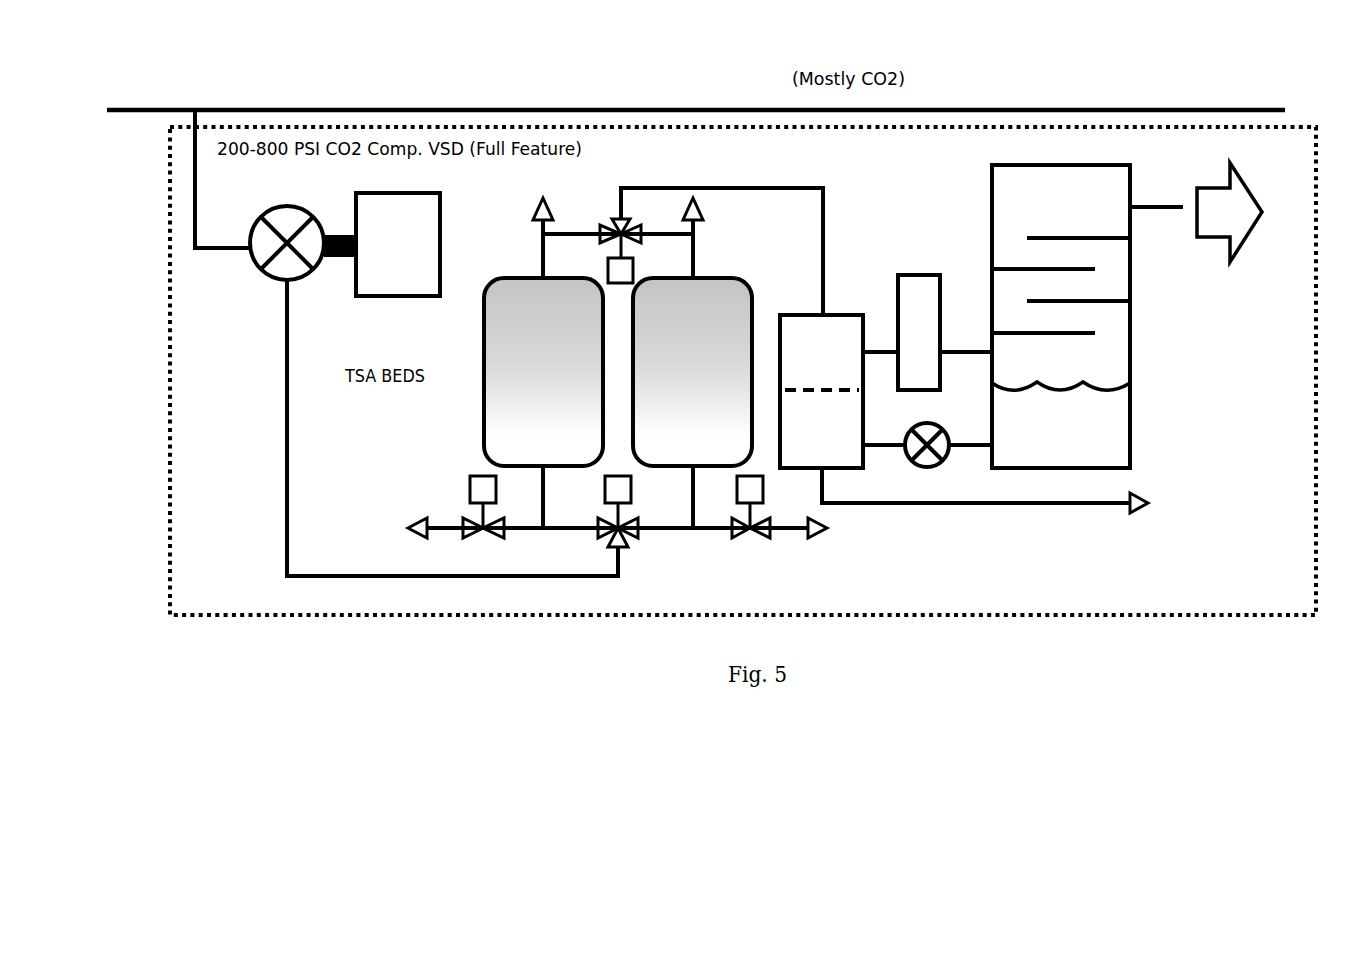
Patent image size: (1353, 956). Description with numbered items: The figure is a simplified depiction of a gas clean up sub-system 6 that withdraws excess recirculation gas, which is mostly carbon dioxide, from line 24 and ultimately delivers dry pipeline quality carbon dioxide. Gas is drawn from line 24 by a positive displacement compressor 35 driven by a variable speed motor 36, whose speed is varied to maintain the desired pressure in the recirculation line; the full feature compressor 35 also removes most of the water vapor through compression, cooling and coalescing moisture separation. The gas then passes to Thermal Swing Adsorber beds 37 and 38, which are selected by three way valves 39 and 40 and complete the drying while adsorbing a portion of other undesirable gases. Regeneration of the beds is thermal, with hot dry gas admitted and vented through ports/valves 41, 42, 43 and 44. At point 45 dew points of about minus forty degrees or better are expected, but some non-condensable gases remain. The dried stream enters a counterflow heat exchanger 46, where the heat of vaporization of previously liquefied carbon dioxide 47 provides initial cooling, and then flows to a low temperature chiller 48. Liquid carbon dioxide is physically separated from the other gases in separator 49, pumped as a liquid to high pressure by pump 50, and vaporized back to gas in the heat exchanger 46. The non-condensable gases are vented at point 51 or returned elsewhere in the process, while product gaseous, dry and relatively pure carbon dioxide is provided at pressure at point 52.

The sub-system 6 is at (718, 371).
The line 24 is at (696, 162).
The positive displacement compressor 35 is at (289, 227).
The variable speed motor 36 is at (398, 244).
The Thermal Swing Adsorber bed 37 is at (543, 374).
The Thermal Swing Adsorber bed 38 is at (692, 374).
The three way valve 39 is at (479, 428).
The three way valve 40 is at (618, 270).
The port/valve 41 is at (523, 205).
The port/valve 42 is at (456, 507).
The port/valve 43 is at (714, 215).
The port/valve 44 is at (779, 528).
The point 45 is at (739, 233).
The counterflow heat exchanger 46 is at (821, 372).
The liquefied CO2 47 is at (821, 429).
The low temperature chiller 48 is at (927, 289).
The separator 49 is at (1061, 316).
The pump 50 is at (927, 444).
The point 51 is at (1213, 236).
The point 52 is at (1011, 518).